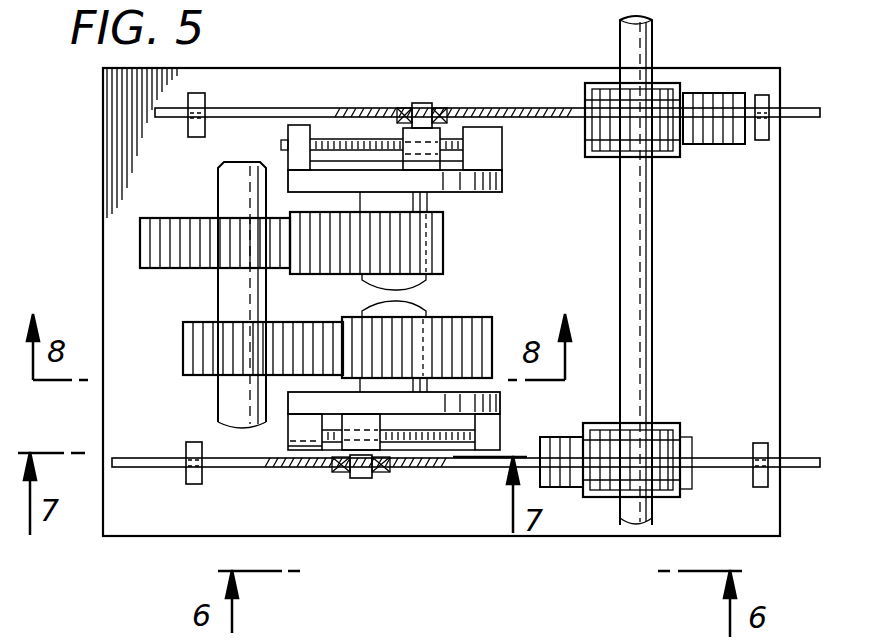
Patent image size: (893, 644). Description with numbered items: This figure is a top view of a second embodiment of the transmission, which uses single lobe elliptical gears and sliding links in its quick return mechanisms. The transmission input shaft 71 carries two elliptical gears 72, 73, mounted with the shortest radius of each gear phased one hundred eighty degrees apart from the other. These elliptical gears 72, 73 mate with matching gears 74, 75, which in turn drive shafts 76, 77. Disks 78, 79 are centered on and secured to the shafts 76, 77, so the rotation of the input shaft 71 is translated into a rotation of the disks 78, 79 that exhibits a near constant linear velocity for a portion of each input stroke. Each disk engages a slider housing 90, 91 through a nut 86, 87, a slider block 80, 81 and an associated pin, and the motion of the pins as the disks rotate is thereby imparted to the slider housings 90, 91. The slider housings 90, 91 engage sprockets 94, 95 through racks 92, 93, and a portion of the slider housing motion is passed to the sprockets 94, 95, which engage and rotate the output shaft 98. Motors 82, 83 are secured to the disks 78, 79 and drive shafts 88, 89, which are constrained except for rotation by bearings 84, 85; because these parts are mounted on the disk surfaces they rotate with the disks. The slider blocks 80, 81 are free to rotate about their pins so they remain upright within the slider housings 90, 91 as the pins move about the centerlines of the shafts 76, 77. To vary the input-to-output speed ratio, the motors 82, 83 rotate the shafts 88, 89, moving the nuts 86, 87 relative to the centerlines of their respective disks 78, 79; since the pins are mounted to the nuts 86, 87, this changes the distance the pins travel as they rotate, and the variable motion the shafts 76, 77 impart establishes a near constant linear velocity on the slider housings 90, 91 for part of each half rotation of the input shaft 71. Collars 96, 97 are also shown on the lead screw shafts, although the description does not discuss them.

The transmission input shaft 71 is at (216, 288).
The elliptical gear 72 is at (196, 375).
The elliptical gear 73 is at (181, 218).
The matching gear 74 is at (493, 342).
The matching gear 75 is at (445, 243).
The shaft 76 is at (392, 312).
The shaft 77 is at (410, 288).
The disk 78 is at (500, 402).
The disk 79 is at (502, 186).
The slider block 80 is at (362, 478).
The slider block 81 is at (421, 103).
The motor 82 is at (292, 432).
The motor 83 is at (490, 155).
The bearing 84 is at (498, 455).
The bearing 85 is at (293, 131).
The nut 86 is at (346, 445).
The nut 87 is at (440, 130).
The shaft 88 is at (405, 456).
The shaft 89 is at (328, 140).
The slider housing 90 is at (450, 468).
The slider housing 91 is at (258, 108).
The rack 92 is at (686, 437).
The rack 93 is at (725, 145).
The sprocket 94 is at (663, 423).
The sprocket 95 is at (665, 158).
The collar 96 is at (195, 485).
The collar 97 is at (196, 137).
The output shaft 98 is at (652, 290).